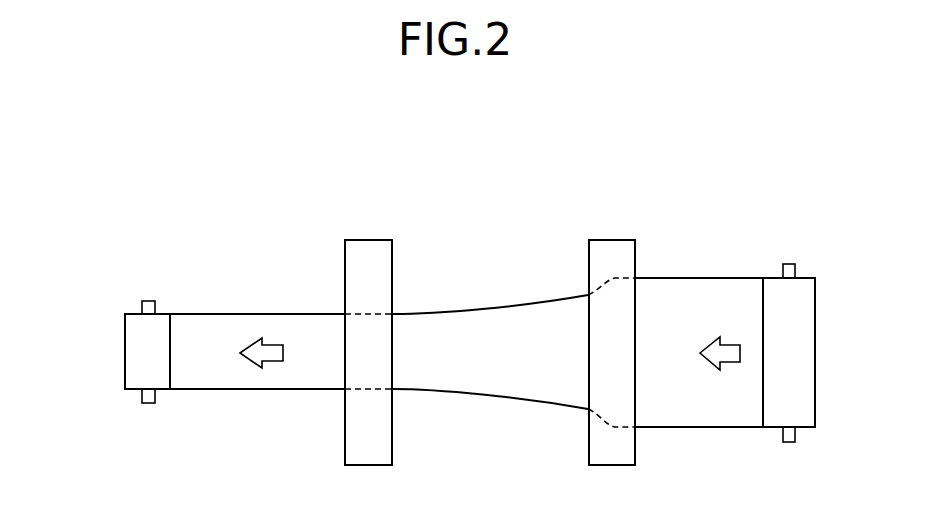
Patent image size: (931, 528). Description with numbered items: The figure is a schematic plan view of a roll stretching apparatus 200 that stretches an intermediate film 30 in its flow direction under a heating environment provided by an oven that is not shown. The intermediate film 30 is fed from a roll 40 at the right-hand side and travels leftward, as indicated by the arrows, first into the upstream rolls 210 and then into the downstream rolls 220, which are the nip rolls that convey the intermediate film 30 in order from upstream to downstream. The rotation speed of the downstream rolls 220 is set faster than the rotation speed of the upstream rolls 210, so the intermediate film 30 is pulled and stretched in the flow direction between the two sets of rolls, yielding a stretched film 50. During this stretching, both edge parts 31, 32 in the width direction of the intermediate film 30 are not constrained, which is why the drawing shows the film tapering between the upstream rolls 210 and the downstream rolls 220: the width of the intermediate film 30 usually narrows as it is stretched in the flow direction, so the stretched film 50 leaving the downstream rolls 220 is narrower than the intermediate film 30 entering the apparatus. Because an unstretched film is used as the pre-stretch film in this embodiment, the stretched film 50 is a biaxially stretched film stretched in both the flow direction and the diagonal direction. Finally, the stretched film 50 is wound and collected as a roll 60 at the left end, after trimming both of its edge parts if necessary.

The roll stretching apparatus 200 is at (686, 147).
The stretched film 50 is at (203, 327).
The edge part 31 is at (493, 308).
The edge part 32 is at (490, 397).
The roll 60 is at (137, 352).
The downstream rolls 220 is at (370, 240).
The upstream rolls 210 is at (615, 240).
The intermediate film 30 is at (695, 290).
The roll 40 is at (803, 347).